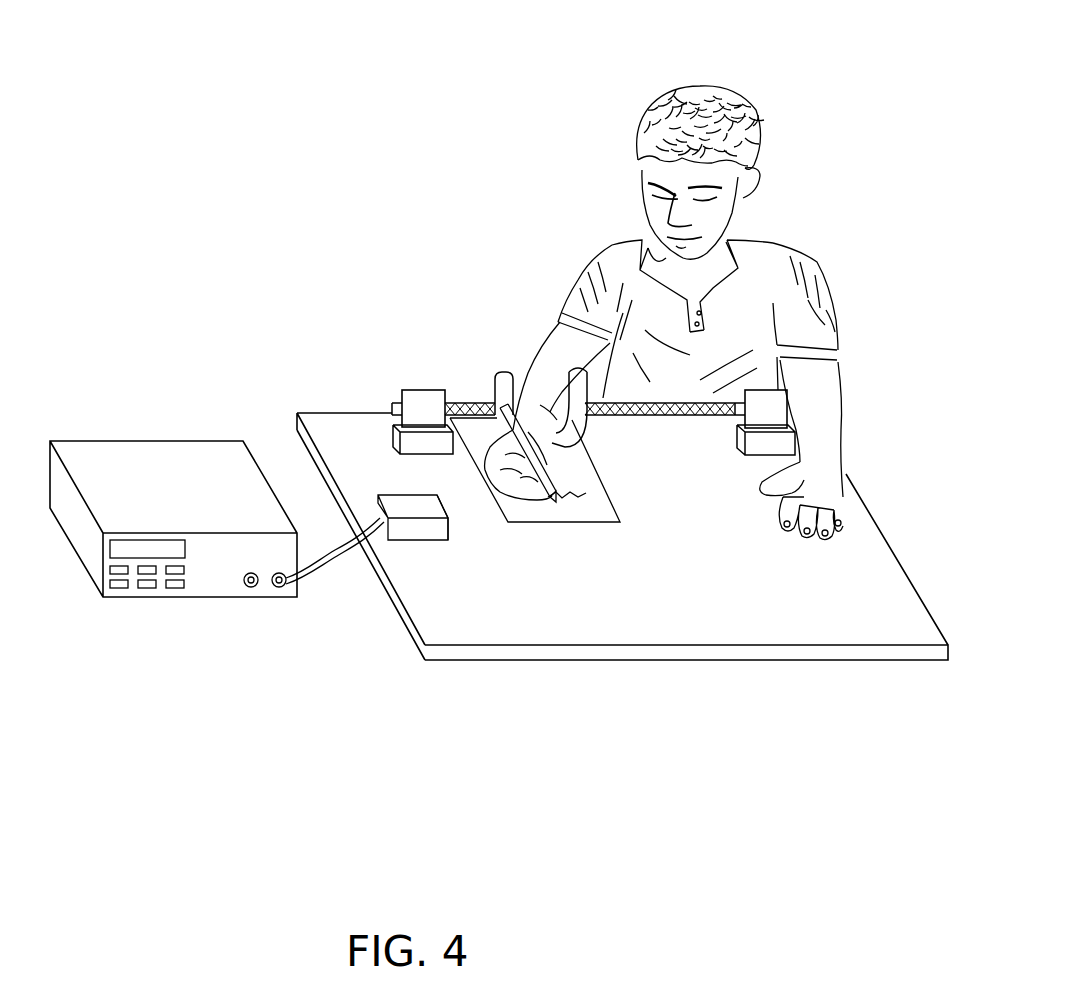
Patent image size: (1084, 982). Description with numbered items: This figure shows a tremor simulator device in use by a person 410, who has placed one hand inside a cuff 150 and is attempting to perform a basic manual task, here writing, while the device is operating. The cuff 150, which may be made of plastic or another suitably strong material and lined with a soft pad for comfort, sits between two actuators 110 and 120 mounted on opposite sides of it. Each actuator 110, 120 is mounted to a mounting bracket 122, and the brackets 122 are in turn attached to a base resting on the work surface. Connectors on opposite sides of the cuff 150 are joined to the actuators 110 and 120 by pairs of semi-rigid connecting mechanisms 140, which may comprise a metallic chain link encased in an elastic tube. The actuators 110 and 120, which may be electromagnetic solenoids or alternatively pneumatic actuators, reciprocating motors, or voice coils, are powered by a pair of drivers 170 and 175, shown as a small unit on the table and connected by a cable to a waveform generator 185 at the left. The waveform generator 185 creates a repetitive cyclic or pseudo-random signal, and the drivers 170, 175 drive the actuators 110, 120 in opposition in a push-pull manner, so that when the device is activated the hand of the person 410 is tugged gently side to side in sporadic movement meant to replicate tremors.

The person 410 is at (610, 119).
The actuator 110 is at (770, 420).
The actuator 120 is at (425, 412).
The mounting brackets 122 is at (408, 445).
The semi-rigid connecting mechanisms 140 is at (472, 400).
The cuff 150 is at (505, 375).
The driver 170 is at (418, 530).
The driver 175 is at (445, 528).
The waveform generator 185 is at (138, 466).